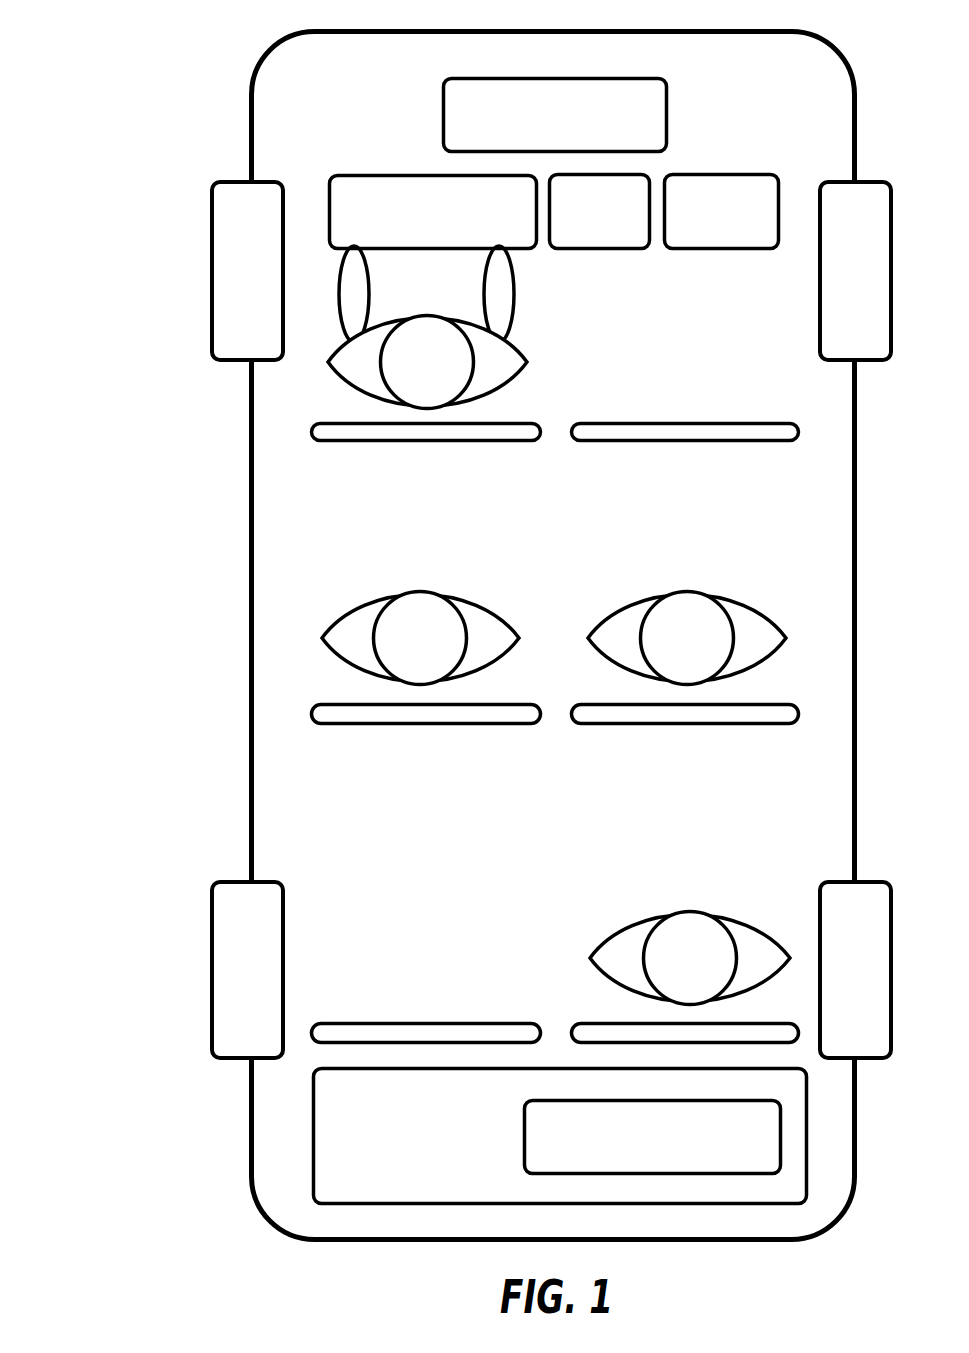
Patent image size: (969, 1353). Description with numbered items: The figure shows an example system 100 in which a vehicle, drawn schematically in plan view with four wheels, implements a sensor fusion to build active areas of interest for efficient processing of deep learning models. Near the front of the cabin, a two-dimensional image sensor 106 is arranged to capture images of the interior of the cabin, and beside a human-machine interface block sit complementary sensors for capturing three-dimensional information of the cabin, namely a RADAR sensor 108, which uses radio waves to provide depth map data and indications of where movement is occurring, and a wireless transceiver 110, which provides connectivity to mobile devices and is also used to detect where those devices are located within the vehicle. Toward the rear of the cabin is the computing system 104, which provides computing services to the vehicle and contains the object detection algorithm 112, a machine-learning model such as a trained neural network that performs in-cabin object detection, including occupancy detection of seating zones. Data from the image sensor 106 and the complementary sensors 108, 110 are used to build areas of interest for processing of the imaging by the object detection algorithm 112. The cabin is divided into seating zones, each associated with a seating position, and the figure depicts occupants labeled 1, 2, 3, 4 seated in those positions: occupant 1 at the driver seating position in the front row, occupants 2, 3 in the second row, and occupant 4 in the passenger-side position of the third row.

The system 100 is at (176, 22).
The computing system 104 is at (392, 1134).
The 2D image sensor 106 is at (538, 142).
The RADAR sensor 108 is at (706, 239).
The wireless transceiver 110 is at (583, 239).
The object detection algorithm 112 is at (635, 1162).
The occupant 1 (driver seat) 1 is at (427, 327).
The occupant 2 is at (420, 638).
The occupant 3 is at (687, 638).
The occupant 4 is at (690, 958).